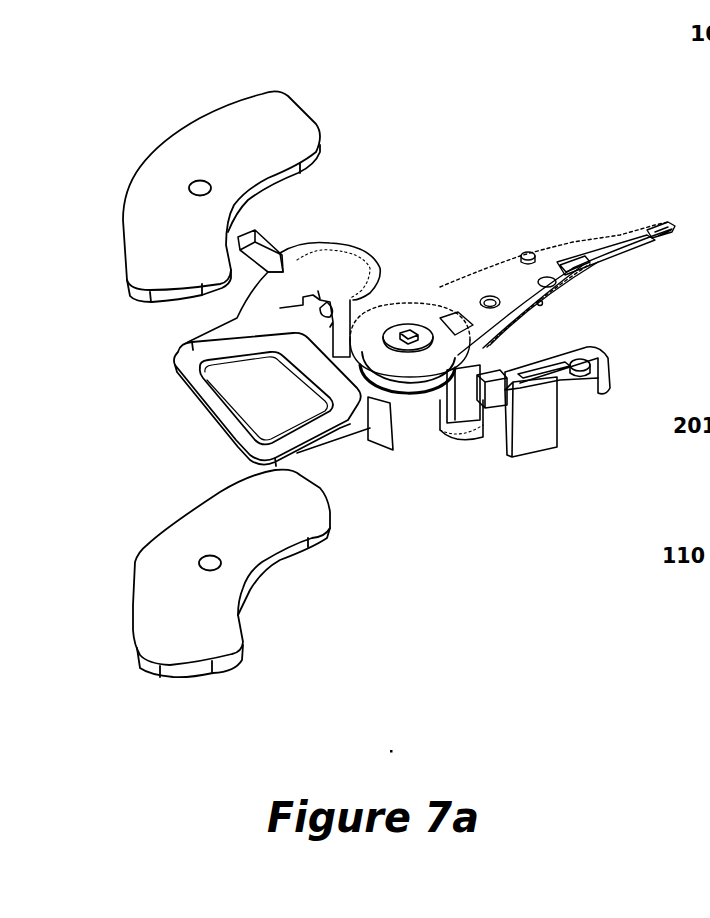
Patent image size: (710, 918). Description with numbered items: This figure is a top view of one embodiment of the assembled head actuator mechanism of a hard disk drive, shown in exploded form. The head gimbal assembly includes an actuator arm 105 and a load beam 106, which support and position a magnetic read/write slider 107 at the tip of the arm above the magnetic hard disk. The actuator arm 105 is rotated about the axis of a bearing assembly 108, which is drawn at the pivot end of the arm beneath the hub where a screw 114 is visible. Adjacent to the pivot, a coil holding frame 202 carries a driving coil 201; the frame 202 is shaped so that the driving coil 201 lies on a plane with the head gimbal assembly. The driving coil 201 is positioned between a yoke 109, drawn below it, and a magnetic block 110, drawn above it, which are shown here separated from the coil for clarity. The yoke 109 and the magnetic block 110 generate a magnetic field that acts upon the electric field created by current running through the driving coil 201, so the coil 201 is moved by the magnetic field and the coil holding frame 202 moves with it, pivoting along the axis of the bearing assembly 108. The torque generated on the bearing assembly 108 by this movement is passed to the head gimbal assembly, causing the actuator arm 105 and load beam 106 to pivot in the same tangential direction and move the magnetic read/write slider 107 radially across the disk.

The magnetic block 110 is at (197, 157).
The yoke 109 is at (170, 612).
The driving coil 201 is at (248, 438).
The coil holding frame 202 is at (292, 326).
The actuator arm 105 is at (471, 300).
The load beam 106 is at (600, 252).
The magnetic read/write slider 107 is at (677, 232).
The screws 114 is at (407, 333).
The bearing assembly 108 is at (420, 393).